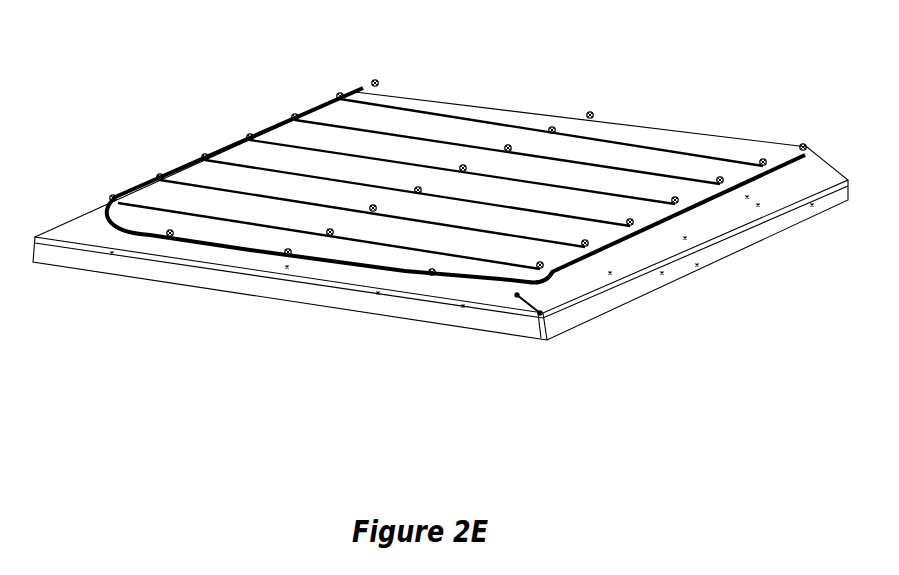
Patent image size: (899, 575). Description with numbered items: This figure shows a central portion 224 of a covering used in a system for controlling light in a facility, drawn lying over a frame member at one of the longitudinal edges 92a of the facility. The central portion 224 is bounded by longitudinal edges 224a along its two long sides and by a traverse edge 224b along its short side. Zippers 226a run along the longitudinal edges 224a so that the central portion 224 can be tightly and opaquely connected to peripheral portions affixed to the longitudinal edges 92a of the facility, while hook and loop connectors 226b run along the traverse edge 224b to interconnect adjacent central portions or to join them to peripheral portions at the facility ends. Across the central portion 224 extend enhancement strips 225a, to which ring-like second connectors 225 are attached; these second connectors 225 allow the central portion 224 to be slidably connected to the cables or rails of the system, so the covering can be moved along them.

The longitudinal edge 92a is at (643, 260).
The central portion 224 is at (412, 150).
The longitudinal edge of central portion 224a is at (490, 156).
The zipper 226a is at (800, 267).
The traverse edge of central portion 224b is at (330, 290).
The hook and loop connector 226b is at (170, 233).
The second connector 225 is at (803, 147).
The enhancement strip 225a is at (575, 190).